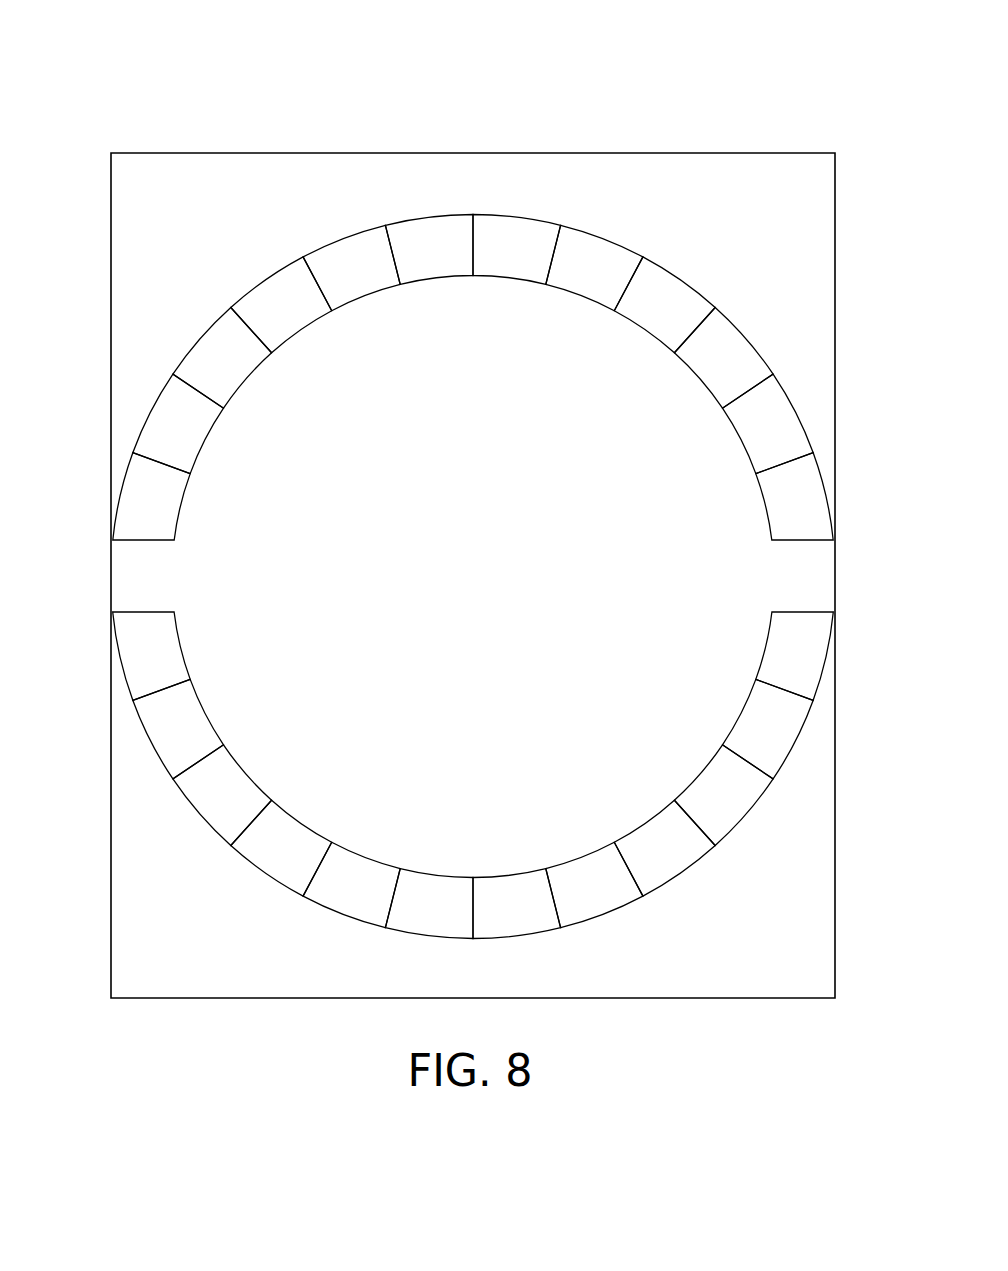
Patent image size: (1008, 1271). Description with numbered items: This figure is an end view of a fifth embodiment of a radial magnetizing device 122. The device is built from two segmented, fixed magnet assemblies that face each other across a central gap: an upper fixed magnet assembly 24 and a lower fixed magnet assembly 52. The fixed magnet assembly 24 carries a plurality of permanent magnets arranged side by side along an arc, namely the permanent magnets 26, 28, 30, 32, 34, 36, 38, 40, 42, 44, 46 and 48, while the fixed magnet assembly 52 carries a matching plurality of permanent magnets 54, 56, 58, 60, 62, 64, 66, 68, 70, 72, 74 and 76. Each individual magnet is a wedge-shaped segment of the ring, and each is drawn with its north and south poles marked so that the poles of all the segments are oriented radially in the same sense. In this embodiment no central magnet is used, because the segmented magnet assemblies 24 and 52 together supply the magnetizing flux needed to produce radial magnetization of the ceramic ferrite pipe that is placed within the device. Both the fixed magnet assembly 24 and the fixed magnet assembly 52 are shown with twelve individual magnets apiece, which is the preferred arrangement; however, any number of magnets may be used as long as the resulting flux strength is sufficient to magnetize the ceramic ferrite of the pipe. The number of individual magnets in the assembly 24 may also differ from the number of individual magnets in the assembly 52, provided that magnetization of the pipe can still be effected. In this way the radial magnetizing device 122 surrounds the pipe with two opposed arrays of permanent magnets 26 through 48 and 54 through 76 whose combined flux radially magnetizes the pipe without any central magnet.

The radial magnetizing device 122 is at (527, 100).
The fixed magnet assembly 24 is at (837, 352).
The fixed magnet assembly 52 is at (836, 772).
The permanent magnet 26 is at (125, 483).
The permanent magnet 28 is at (153, 403).
The permanent magnet 30 is at (212, 322).
The permanent magnet 32 is at (285, 266).
The permanent magnet 34 is at (364, 229).
The permanent magnet 36 is at (440, 216).
The permanent magnet 38 is at (529, 219).
The permanent magnet 40 is at (610, 238).
The permanent magnet 42 is at (690, 284).
The permanent magnet 44 is at (753, 330).
The permanent magnet 46 is at (784, 390).
The permanent magnet 48 is at (820, 469).
The permanent magnet 54 is at (114, 648).
The permanent magnet 56 is at (142, 733).
The permanent magnet 58 is at (217, 837).
The permanent magnet 60 is at (262, 871).
The permanent magnet 62 is at (340, 912).
The permanent magnet 64 is at (401, 936).
The permanent magnet 66 is at (502, 939).
The permanent magnet 68 is at (594, 922).
The permanent magnet 70 is at (672, 878).
The permanent magnet 72 is at (740, 826).
The permanent magnet 74 is at (788, 763).
The permanent magnet 76 is at (825, 680).